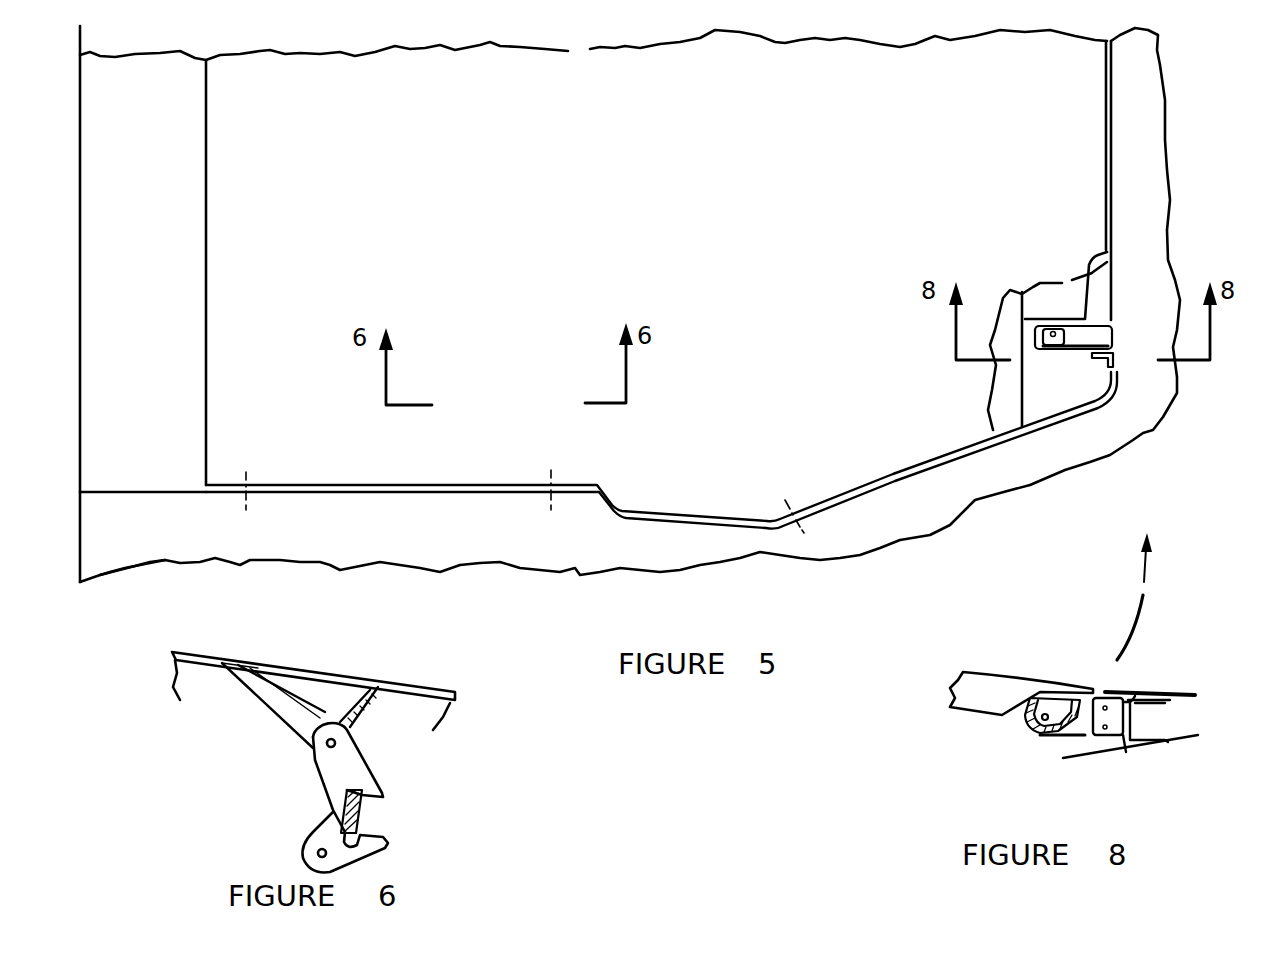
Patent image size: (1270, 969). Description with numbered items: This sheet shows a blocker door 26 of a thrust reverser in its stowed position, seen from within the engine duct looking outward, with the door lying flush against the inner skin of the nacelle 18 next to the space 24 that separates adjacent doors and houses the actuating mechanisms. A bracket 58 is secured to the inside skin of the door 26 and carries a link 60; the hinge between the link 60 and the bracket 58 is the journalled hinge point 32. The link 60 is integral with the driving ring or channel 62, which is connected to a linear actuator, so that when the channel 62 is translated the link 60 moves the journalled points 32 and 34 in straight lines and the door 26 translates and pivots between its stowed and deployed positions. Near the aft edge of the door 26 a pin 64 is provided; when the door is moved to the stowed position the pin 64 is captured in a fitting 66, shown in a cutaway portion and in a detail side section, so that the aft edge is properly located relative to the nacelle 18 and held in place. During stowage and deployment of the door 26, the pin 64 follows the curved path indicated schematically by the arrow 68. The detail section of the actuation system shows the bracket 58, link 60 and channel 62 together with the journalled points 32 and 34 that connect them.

In FIG. 5, the nacelle 18 is at (146, 492).
In FIG. 8, the nacelle 18 is at (1150, 690).
In FIG. 5, the space 24 is at (238, 560).
In FIG. 5, the blocker door 26 is at (832, 507).
In FIG. 6, the blocker door 26 is at (405, 682).
In FIG. 8, the blocker door 26 is at (987, 675).
In FIG. 6, the hinge point 32 is at (340, 745).
In FIG. 6, the journalled point 34 is at (317, 847).
In FIG. 6, the bracket 58 is at (260, 708).
In FIG. 6, the link 60 is at (320, 775).
In FIG. 6, the driving ring or channel 62 is at (365, 797).
In FIG. 5, the pin 64 is at (1053, 330).
In FIG. 8, the pin 64 is at (1047, 714).
In FIG. 5, the fitting 66 is at (1115, 358).
In FIG. 8, the fitting 66 is at (1057, 737).
In FIG. 8, the arrow 68 is at (1150, 567).